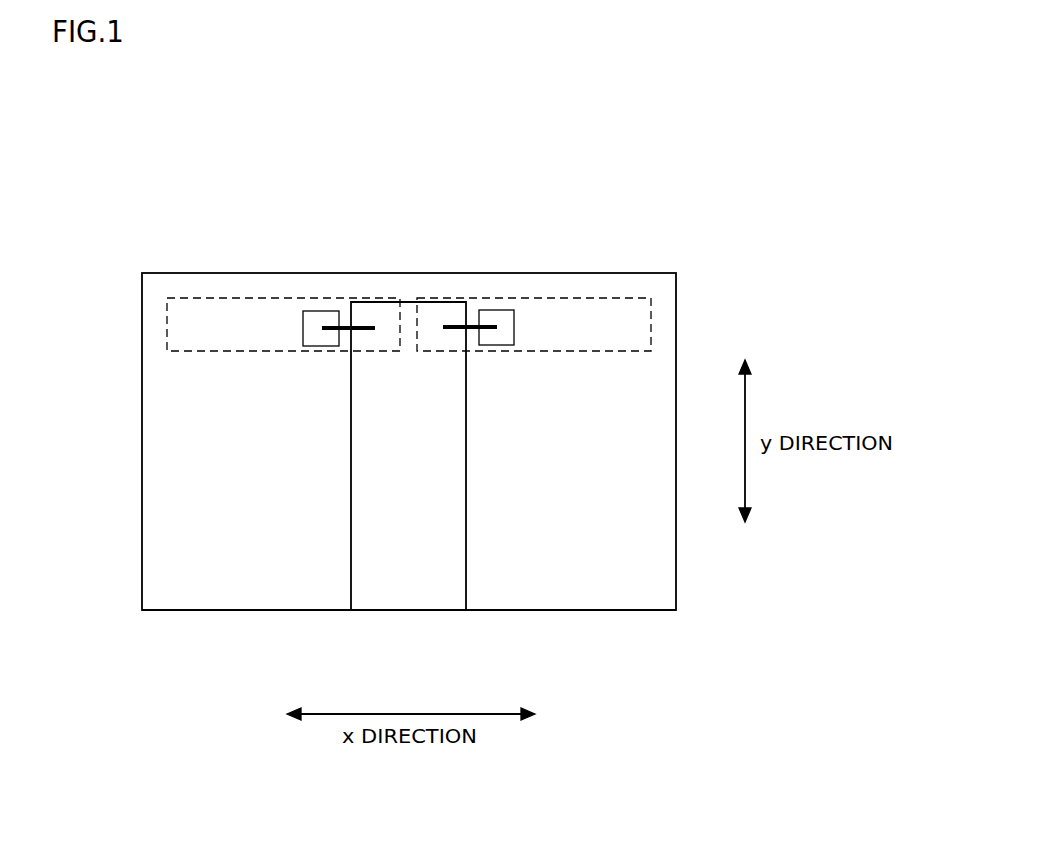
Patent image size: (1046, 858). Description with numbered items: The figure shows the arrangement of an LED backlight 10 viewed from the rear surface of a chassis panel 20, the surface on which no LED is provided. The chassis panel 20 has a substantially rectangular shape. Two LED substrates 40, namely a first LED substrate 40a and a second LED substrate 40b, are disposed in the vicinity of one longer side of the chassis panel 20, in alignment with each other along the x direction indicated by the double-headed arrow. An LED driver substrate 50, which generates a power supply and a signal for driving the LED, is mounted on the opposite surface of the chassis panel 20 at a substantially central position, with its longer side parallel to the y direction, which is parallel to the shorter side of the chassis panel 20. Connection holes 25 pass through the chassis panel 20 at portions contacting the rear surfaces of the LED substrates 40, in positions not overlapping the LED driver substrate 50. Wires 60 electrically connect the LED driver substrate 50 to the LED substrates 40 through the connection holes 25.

The LED backlight 10 is at (652, 183).
The chassis panel 20 is at (561, 600).
The connection hole 25 is at (304, 330).
The LED substrate 40 is at (409, 238).
The first LED substrate 40a is at (275, 310).
The second LED substrate 40b is at (534, 264).
The LED driver substrate 50 is at (403, 588).
The wire 60 is at (455, 330).